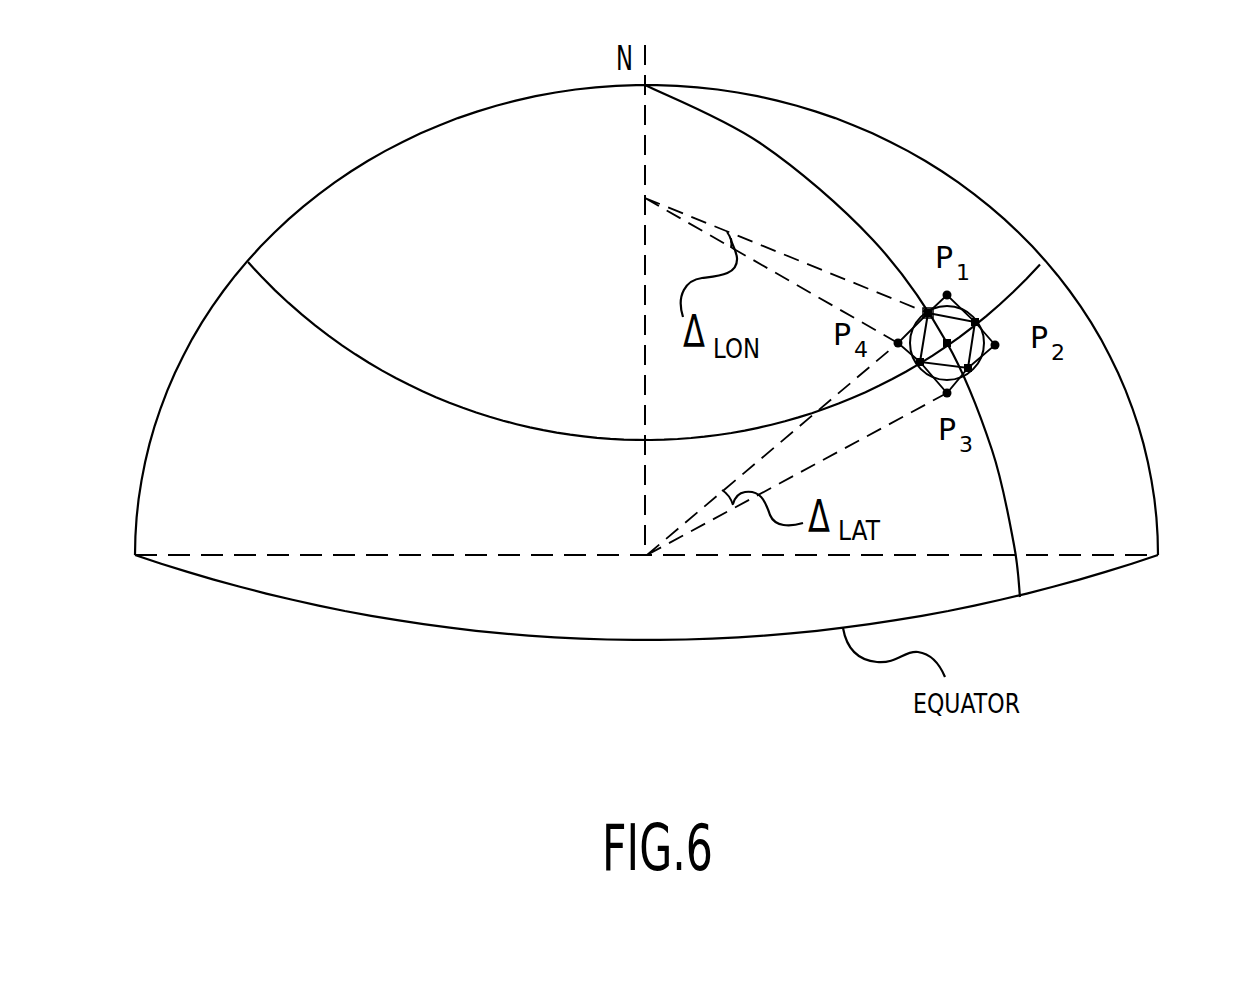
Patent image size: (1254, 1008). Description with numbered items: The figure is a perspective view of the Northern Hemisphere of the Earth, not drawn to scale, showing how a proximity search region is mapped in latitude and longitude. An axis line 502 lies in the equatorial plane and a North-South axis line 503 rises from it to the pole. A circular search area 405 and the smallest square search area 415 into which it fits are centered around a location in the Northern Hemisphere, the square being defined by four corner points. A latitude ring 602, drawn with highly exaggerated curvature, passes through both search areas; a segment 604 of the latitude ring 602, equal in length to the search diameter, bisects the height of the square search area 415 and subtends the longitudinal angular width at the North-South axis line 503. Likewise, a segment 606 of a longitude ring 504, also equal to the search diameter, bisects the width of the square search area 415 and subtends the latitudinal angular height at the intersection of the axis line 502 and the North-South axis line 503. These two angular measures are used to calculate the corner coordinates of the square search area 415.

The axis line 502 is at (576, 556).
The North-South axis line 503 is at (643, 167).
The longitude ring 504 is at (1010, 512).
The latitude ring 602 is at (409, 384).
The segment of latitude ring 604 is at (980, 330).
The segment of longitude ring 606 is at (977, 366).
The circular search area 405 is at (960, 303).
The square search area 415 is at (927, 308).